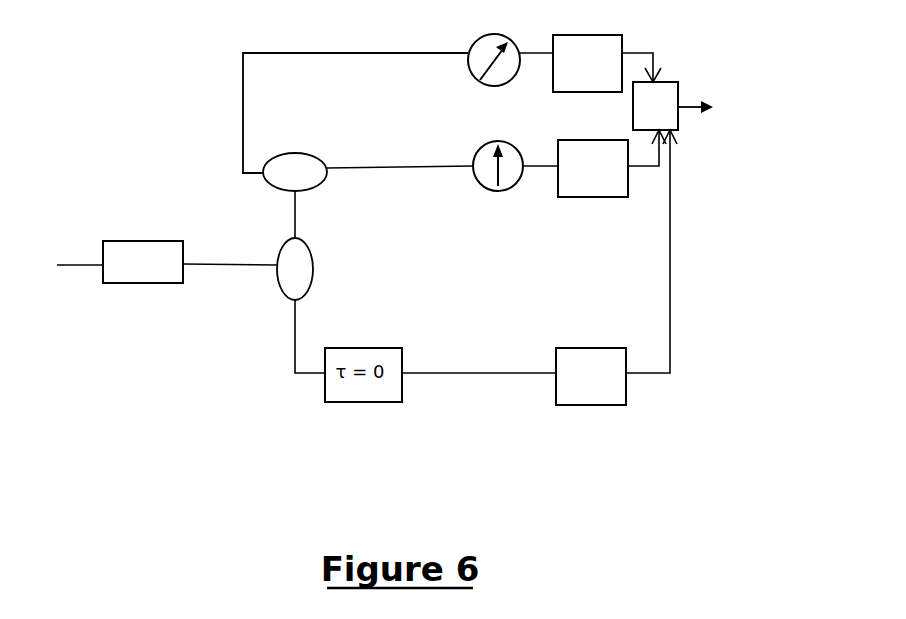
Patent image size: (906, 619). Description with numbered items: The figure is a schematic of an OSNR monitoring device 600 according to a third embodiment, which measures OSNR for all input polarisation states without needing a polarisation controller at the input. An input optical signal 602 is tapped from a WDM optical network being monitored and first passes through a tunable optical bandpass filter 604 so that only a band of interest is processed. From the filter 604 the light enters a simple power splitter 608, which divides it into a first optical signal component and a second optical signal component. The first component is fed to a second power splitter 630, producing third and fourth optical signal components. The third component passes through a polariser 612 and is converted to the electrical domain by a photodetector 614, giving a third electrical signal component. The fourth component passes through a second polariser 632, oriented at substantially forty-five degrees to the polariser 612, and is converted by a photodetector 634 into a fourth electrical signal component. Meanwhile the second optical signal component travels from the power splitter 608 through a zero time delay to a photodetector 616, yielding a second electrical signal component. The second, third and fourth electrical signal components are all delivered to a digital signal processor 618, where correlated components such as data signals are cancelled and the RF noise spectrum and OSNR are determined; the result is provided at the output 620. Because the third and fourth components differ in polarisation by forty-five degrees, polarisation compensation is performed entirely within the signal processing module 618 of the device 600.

The OSNR monitoring device 600 is at (124, 159).
The input optical signal 602 is at (67, 249).
The tunable optical bandpass filter 604 is at (143, 262).
The power splitter 608 is at (320, 269).
The polariser 612 is at (498, 184).
The photodetector 614 is at (593, 168).
The photodetector 616 is at (591, 376).
The digital signal processor 618 is at (655, 106).
The output signal 620 is at (725, 106).
The second power splitter 630 is at (295, 157).
The second polariser 632 is at (488, 71).
The photodetector 634 is at (587, 63).